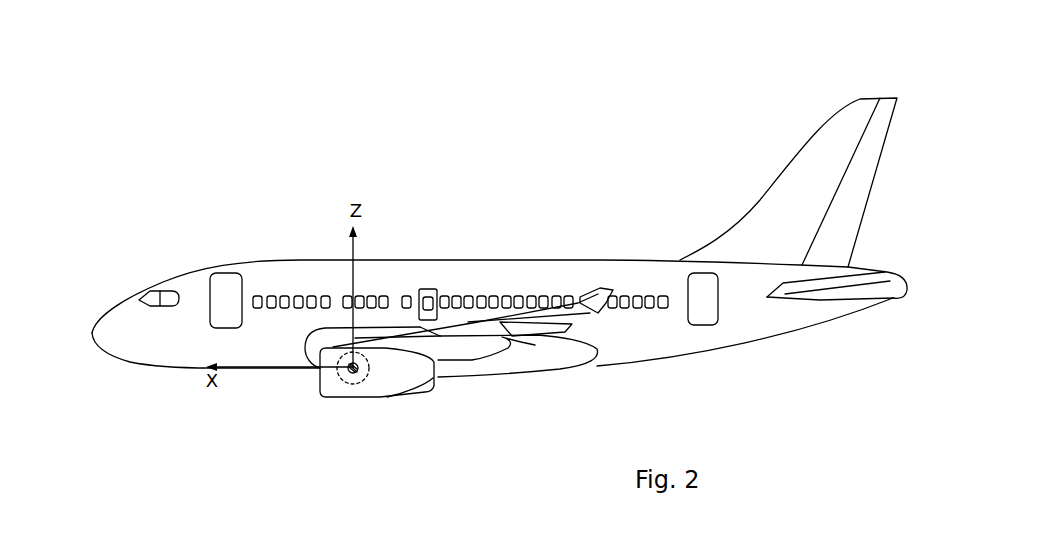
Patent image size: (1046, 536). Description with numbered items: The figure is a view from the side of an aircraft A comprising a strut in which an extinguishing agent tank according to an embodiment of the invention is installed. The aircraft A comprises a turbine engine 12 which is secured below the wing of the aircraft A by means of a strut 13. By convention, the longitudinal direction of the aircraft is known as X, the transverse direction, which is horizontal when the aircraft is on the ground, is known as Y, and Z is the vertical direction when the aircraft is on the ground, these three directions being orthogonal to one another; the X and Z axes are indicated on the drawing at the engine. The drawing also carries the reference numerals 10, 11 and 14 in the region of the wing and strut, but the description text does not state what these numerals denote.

The aircraft A is at (820, 155).
The belly fairing 10 is at (457, 370).
The wing 11 is at (463, 328).
The turbine engine 12 is at (380, 397).
The strut 13 is at (466, 347).
The pylon 14 is at (441, 353).